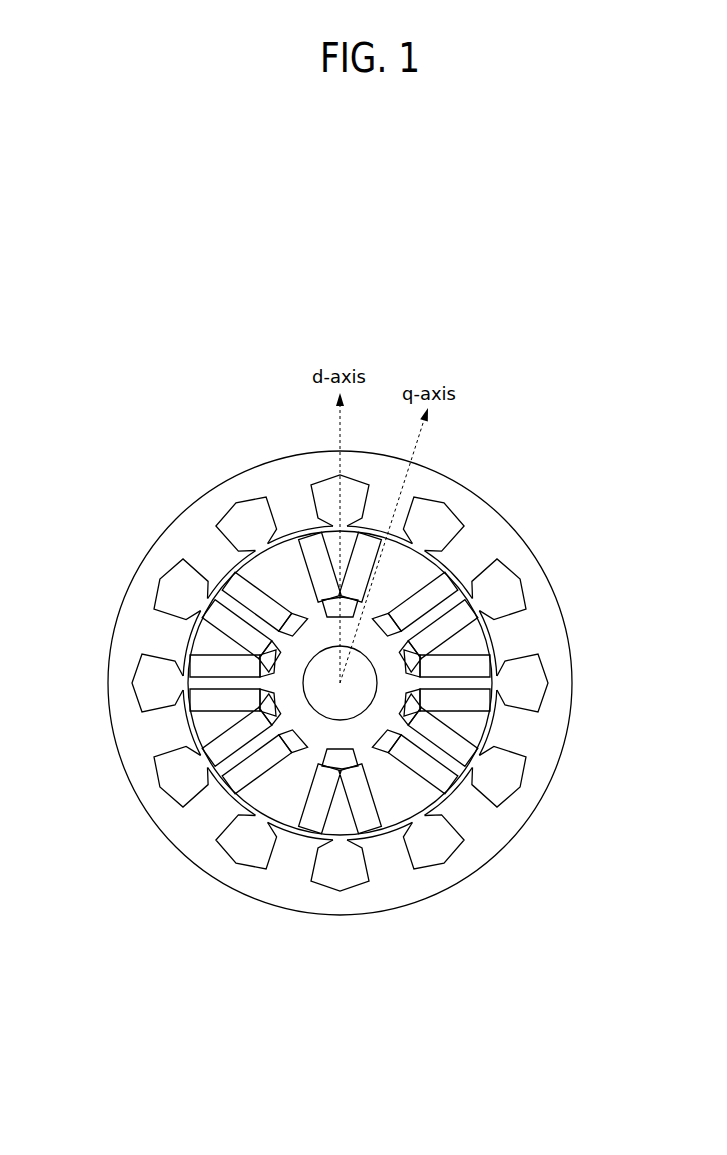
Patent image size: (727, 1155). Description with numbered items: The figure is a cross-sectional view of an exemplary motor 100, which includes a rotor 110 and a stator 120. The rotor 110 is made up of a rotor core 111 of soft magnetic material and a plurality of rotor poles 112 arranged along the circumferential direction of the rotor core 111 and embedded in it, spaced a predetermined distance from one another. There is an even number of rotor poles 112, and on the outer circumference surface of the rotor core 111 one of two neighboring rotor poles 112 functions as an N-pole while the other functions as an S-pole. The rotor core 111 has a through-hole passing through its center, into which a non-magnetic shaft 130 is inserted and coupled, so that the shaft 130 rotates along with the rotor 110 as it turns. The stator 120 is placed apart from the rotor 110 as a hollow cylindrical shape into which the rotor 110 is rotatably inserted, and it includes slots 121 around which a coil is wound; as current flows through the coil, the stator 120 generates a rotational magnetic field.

The motor 100 is at (140, 478).
The rotor 110 is at (253, 683).
The rotor core 111 is at (285, 700).
The rotor poles 112 is at (200, 720).
The stator 120 is at (374, 683).
The slots 121 is at (527, 595).
The shaft 130 is at (340, 705).